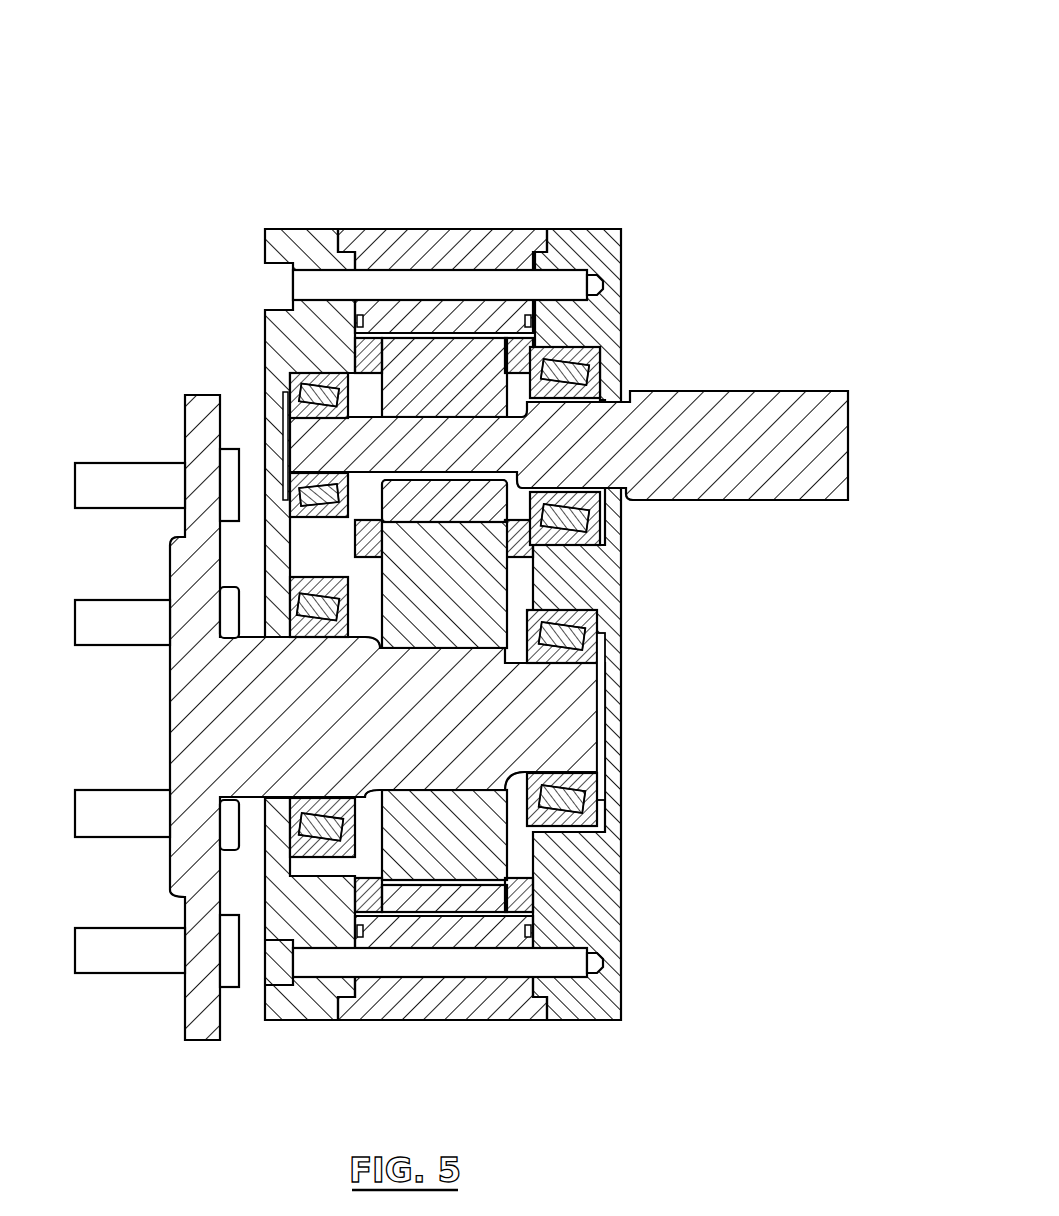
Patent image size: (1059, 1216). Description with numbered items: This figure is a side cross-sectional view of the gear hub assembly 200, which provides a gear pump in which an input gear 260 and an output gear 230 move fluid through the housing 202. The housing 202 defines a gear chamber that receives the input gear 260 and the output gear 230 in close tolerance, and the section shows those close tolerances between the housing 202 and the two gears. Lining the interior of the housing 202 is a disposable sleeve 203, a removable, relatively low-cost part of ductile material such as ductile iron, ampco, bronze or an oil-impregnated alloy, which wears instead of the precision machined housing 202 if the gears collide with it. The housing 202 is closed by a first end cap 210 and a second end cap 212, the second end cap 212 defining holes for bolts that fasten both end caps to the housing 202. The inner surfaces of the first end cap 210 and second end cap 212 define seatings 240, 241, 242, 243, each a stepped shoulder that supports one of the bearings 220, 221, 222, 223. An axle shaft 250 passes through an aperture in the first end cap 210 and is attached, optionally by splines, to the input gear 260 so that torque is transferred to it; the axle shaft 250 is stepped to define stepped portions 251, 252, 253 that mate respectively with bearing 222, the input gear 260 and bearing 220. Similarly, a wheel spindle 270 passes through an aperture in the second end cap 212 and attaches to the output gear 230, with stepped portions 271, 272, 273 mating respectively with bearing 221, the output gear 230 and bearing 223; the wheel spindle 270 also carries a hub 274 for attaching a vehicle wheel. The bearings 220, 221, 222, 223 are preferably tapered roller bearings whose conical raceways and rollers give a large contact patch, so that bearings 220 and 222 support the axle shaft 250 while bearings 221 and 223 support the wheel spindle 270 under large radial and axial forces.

The gear hub assembly 200 is at (626, 80).
The housing 202 is at (446, 229).
The disposable sleeve 203 is at (550, 340).
The first end cap 210 is at (586, 229).
The second end cap 212 is at (304, 230).
The bearing 220 is at (608, 373).
The bearing 221 is at (608, 775).
The bearing 222 is at (276, 402).
The bearing 223 is at (290, 600).
The output gear 230 is at (420, 603).
The seating 240 is at (648, 347).
The seating 241 is at (608, 616).
The seating 242 is at (276, 511).
The seating 243 is at (199, 861).
The axle shaft 250 is at (689, 458).
The stepped portion 251 is at (318, 405).
The stepped portion 252 is at (538, 542).
The stepped portion 253 is at (638, 548).
The input gear 260 is at (420, 391).
The wheel spindle 270 is at (330, 712).
The stepped portion 271 is at (605, 653).
The stepped portion 272 is at (611, 832).
The stepped portion 273 is at (290, 802).
The hub 274 is at (185, 433).